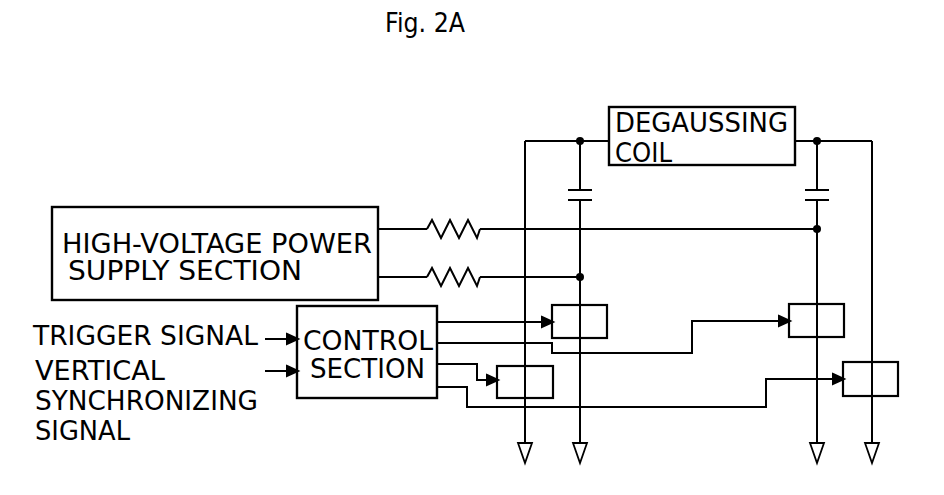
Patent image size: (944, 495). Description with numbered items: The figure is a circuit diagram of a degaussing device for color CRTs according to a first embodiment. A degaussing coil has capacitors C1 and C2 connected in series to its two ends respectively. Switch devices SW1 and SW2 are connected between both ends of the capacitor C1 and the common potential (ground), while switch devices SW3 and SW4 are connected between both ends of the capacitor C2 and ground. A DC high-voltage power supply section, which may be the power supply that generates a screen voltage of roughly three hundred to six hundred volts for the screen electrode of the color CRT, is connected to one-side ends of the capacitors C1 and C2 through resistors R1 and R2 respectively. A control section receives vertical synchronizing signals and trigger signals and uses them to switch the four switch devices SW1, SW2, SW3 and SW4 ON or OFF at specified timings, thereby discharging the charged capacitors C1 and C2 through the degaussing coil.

The resistor R1 is at (453, 266).
The resistor R2 is at (453, 217).
The capacitor C1 is at (592, 196).
The capacitor C2 is at (830, 196).
The switch device SW1 is at (525, 382).
The switch device SW2 is at (579, 321).
The switch device SW3 is at (816, 320).
The switch device SW4 is at (870, 379).